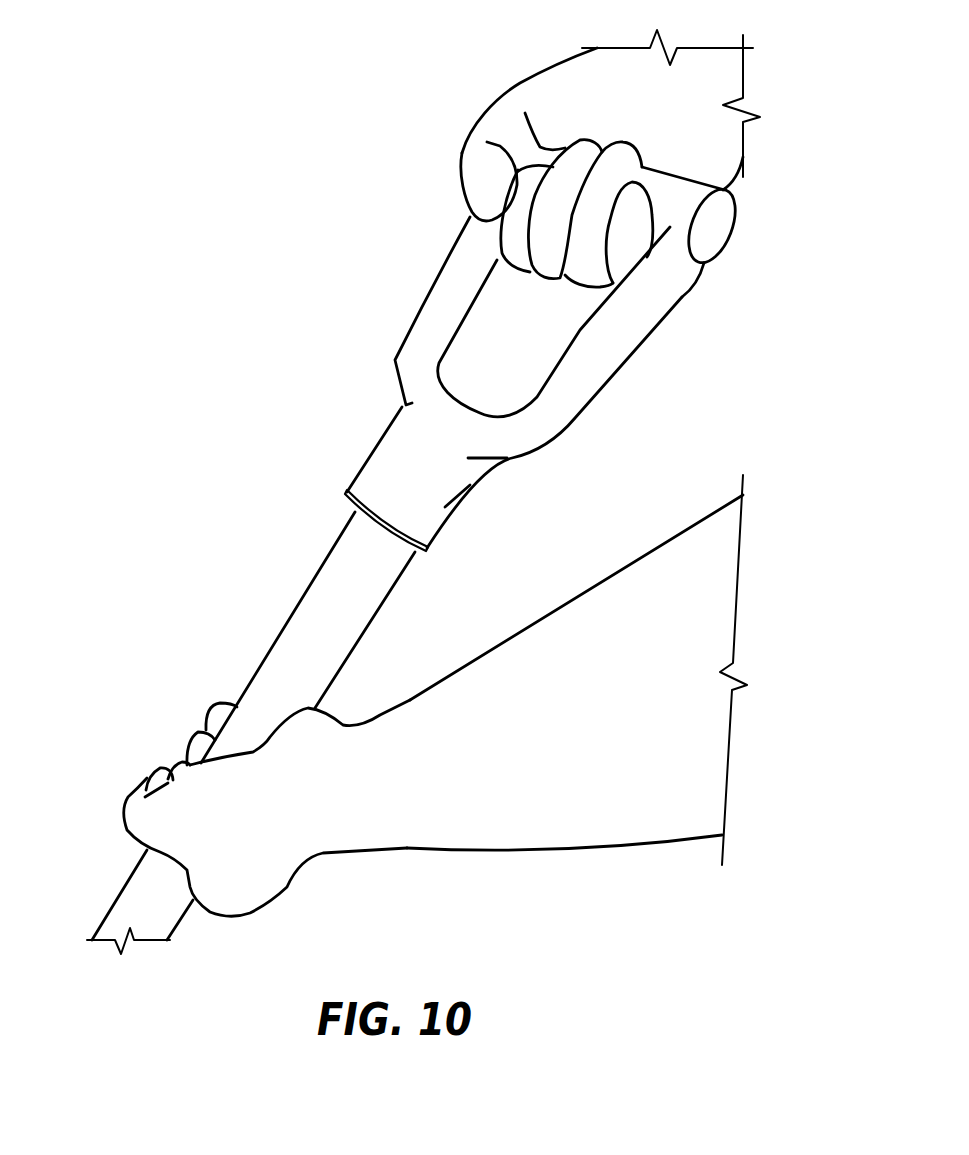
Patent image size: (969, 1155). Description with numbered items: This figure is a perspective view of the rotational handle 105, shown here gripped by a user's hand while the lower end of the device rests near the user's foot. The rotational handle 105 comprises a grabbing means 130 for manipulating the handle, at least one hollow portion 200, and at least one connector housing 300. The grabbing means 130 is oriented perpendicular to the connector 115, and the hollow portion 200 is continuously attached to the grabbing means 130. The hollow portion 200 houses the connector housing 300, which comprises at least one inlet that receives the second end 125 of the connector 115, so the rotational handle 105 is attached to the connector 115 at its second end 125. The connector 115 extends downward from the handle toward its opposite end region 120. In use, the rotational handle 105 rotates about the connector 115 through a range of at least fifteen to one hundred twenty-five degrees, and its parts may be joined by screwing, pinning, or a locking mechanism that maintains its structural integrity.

The rotational handle 105 is at (205, 150).
The connector 115 is at (257, 683).
The lower shaft end 120 is at (107, 925).
The second end 125 is at (378, 595).
The grabbing means 130 is at (717, 231).
The hollow portion 200 is at (382, 447).
The connector housing 300 is at (345, 494).